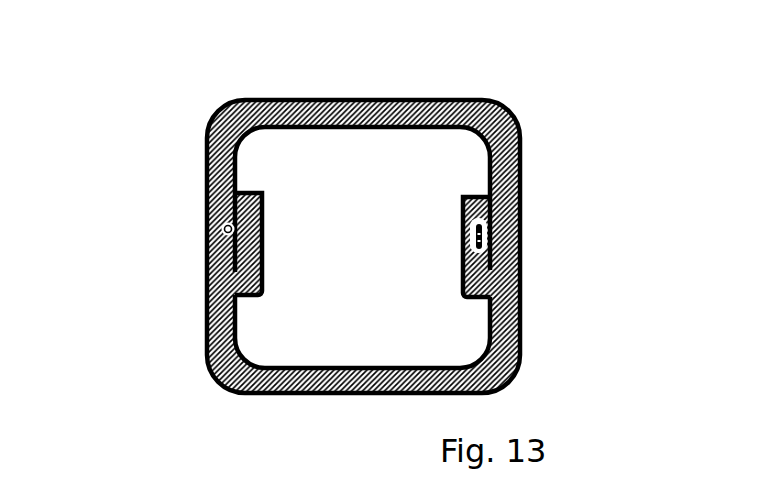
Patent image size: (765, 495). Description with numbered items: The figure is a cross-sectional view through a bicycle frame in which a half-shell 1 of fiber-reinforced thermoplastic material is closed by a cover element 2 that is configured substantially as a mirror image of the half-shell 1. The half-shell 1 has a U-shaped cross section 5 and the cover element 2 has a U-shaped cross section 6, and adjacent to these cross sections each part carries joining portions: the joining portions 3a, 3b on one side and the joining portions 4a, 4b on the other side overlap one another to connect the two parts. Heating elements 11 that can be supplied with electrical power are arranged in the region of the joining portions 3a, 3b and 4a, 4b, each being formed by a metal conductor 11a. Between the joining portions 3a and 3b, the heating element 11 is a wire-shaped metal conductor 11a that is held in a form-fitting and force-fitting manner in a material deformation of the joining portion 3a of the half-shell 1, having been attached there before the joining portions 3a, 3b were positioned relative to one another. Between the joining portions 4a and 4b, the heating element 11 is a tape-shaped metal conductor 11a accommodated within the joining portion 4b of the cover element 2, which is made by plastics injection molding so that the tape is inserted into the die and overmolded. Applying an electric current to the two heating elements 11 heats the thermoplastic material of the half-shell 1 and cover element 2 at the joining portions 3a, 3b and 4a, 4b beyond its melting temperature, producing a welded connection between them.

The half-shell 1 is at (340, 100).
The cover element 2 is at (368, 378).
The joining portion 3a is at (192, 248).
The joining portion 3b is at (247, 238).
The joining portion 4a is at (529, 240).
The joining portion 4b is at (459, 233).
The U-shaped cross section 5 is at (181, 113).
The U-shaped cross section 6 is at (557, 342).
The heating element 11 is at (206, 222).
The metal conductor 11a is at (522, 228).